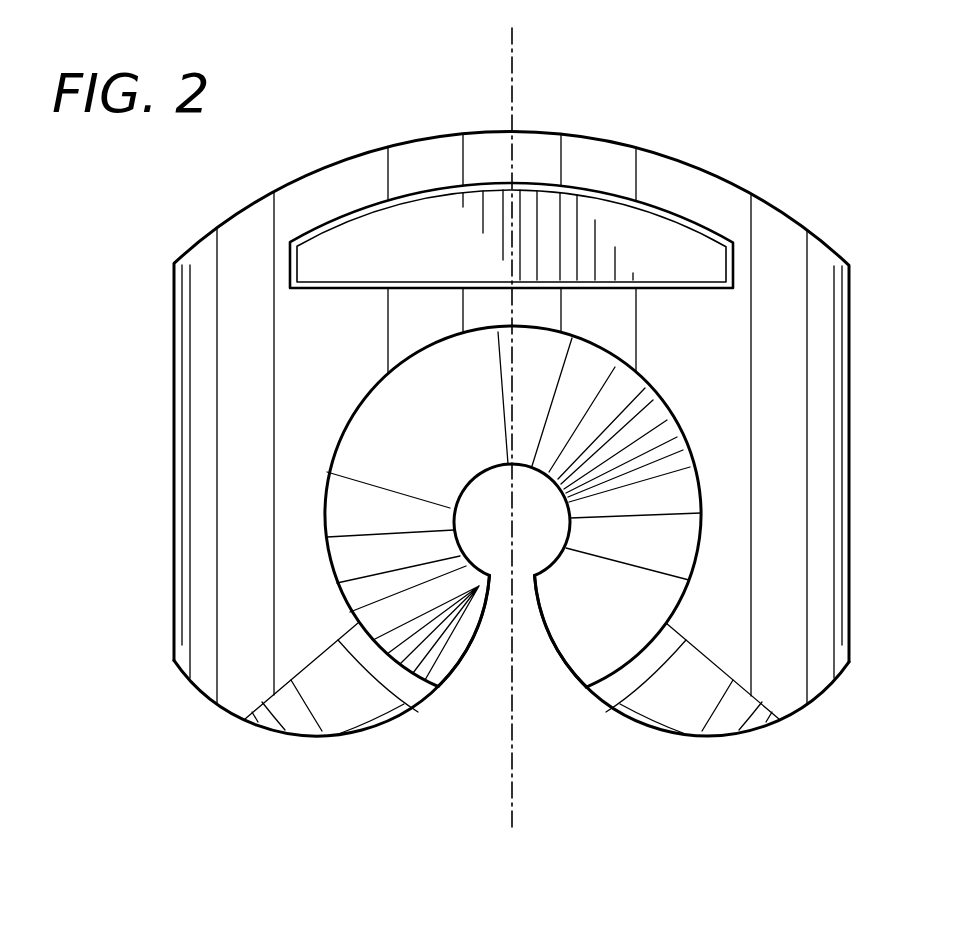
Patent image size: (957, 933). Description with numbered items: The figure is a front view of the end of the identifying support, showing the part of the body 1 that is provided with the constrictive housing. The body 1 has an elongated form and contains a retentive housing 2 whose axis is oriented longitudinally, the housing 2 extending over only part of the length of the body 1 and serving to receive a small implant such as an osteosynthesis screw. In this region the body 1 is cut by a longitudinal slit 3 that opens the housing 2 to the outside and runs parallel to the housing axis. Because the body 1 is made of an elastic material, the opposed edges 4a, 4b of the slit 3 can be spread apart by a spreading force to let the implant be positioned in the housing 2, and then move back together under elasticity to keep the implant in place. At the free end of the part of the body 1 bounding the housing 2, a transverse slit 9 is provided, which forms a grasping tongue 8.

The body 1 is at (706, 148).
The retentive housing 2 is at (487, 492).
The longitudinal slit 3 is at (506, 28).
The opposed edge of the slit 4a is at (543, 587).
The opposed edge of the slit 4b is at (470, 592).
The grasping tongue 8 is at (397, 160).
The transverse slit 9 is at (440, 259).